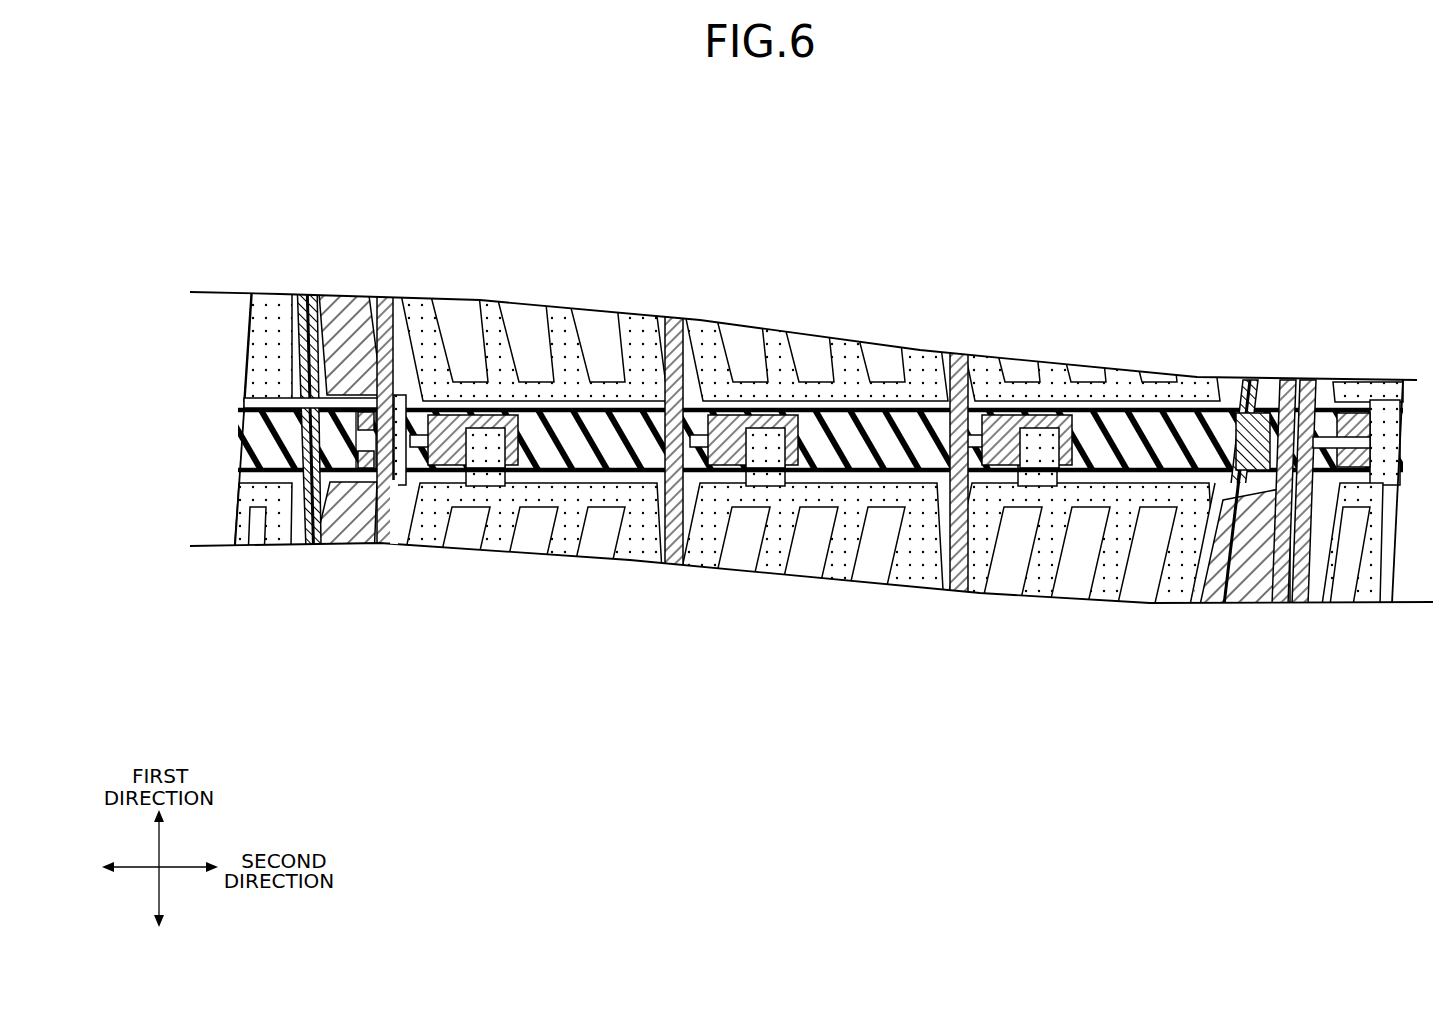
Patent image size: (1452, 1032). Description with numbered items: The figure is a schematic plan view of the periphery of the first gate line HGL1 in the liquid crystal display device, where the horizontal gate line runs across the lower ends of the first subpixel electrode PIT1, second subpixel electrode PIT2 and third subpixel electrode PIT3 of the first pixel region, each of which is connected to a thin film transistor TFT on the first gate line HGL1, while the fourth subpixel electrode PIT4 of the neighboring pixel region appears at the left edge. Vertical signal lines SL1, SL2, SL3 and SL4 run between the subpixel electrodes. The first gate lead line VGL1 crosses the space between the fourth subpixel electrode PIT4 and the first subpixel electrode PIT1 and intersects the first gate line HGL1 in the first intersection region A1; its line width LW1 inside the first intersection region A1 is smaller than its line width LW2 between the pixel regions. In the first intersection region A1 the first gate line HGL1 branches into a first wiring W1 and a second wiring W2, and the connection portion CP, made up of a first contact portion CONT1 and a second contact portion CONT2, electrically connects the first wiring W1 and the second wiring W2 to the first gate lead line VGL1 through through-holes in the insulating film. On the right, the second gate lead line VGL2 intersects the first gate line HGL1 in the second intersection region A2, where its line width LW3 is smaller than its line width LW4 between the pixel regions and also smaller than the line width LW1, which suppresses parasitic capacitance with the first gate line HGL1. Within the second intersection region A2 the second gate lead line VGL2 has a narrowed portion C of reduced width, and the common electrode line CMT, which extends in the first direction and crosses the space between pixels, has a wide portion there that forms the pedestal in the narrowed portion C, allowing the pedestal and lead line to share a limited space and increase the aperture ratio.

The first signal line SL1 is at (392, 297).
The second signal line SL2 is at (678, 325).
The third signal line SL3 is at (965, 357).
The fourth signal line SL4 is at (1315, 400).
The first gate lead line VGL1 is at (323, 293).
The second gate lead line VGL2 is at (1273, 400).
The first wiring W1 is at (402, 405).
The second wiring W2 is at (396, 490).
The thin film transistor TFT is at (464, 405).
The common electrode line CMT is at (1247, 400).
The first gate line HGL1 is at (262, 408).
The connection portion CP is at (123, 400).
The first contact portion CONT1 is at (360, 418).
The second contact portion CONT2 is at (360, 457).
The line width of first gate lead line in first intersection region LW1 is at (455, 442).
The line width of first gate lead line between pixel regions LW2 is at (397, 341).
The line width of second gate lead line in second intersection region LW3 is at (1367, 438).
The line width of second gate lead line between pixel regions LW4 is at (1303, 582).
The first subpixel electrode PIT1 is at (547, 540).
The second subpixel electrode PIT2 is at (760, 545).
The third subpixel electrode PIT3 is at (1043, 550).
The fourth subpixel electrode PIT4 is at (258, 520).
The first intersection region A1 is at (345, 490).
The second intersection region A2 is at (1306, 575).
The narrowed portion C is at (1228, 612).